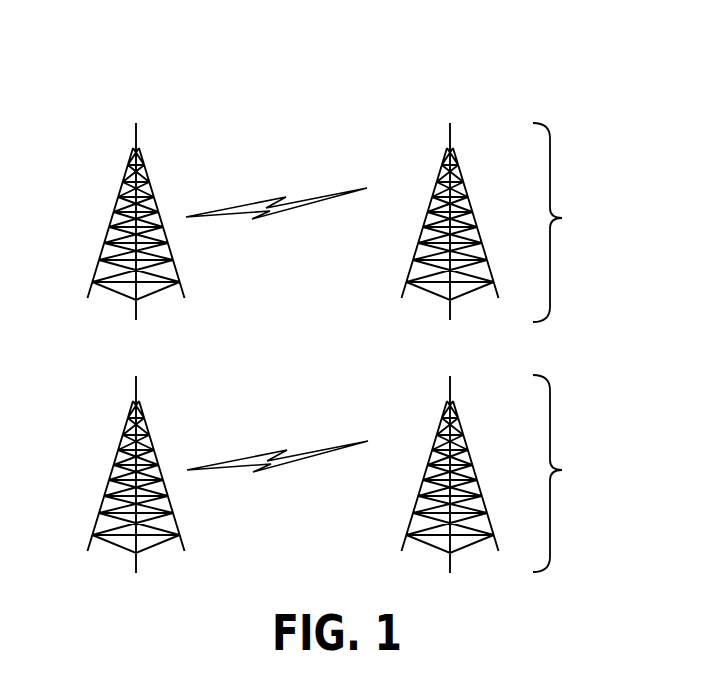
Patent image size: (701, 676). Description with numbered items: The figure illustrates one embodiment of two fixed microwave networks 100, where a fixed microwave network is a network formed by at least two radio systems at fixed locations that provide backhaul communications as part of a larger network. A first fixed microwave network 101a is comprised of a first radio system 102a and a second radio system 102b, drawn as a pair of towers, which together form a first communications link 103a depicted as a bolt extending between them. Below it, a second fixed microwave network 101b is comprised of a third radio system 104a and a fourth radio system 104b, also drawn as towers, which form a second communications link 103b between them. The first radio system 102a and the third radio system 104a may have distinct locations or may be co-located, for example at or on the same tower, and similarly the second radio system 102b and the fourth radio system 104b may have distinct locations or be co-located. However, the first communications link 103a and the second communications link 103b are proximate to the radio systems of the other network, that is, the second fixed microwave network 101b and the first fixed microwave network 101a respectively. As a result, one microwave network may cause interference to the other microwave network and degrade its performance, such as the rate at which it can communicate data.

The two fixed microwave networks 100 is at (358, 46).
The first fixed microwave network 101a is at (334, 222).
The second fixed microwave network 101b is at (334, 474).
The first radio system 102a is at (112, 227).
The second radio system 102b is at (428, 227).
The first communications link 103a is at (252, 204).
The second communications link 103b is at (253, 457).
The third radio system 104a is at (112, 480).
The fourth radio system 104b is at (428, 480).